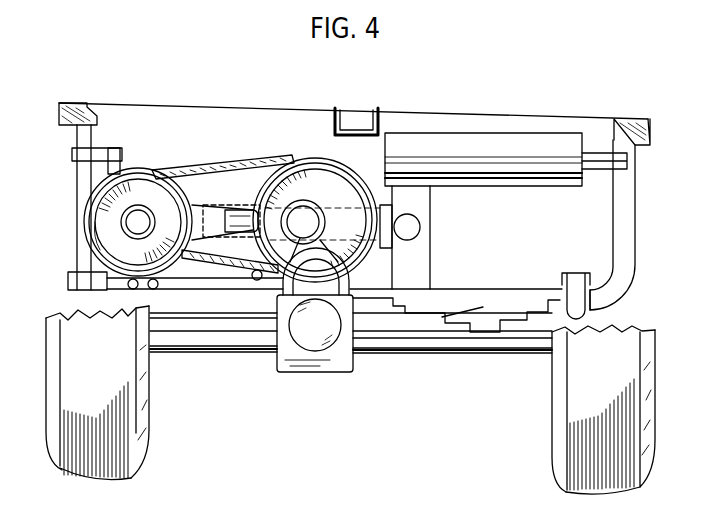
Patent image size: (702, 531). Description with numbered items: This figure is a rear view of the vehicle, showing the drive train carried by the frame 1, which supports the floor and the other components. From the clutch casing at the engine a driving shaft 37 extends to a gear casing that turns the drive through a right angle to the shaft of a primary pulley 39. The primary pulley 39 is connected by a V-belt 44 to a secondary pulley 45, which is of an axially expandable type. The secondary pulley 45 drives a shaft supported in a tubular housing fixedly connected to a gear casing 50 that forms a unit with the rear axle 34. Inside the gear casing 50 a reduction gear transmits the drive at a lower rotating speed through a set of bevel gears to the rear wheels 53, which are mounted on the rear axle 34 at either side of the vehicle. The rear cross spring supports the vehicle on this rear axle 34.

The frame 1 is at (71, 103).
The primary pulley 39 is at (147, 197).
The V-belt 44 is at (240, 177).
The secondary pulley 45 is at (301, 178).
The driving shaft 37 is at (210, 203).
The gear casing 50 is at (344, 258).
The rear axle 34 is at (219, 335).
The rear wheels 53 is at (120, 428).